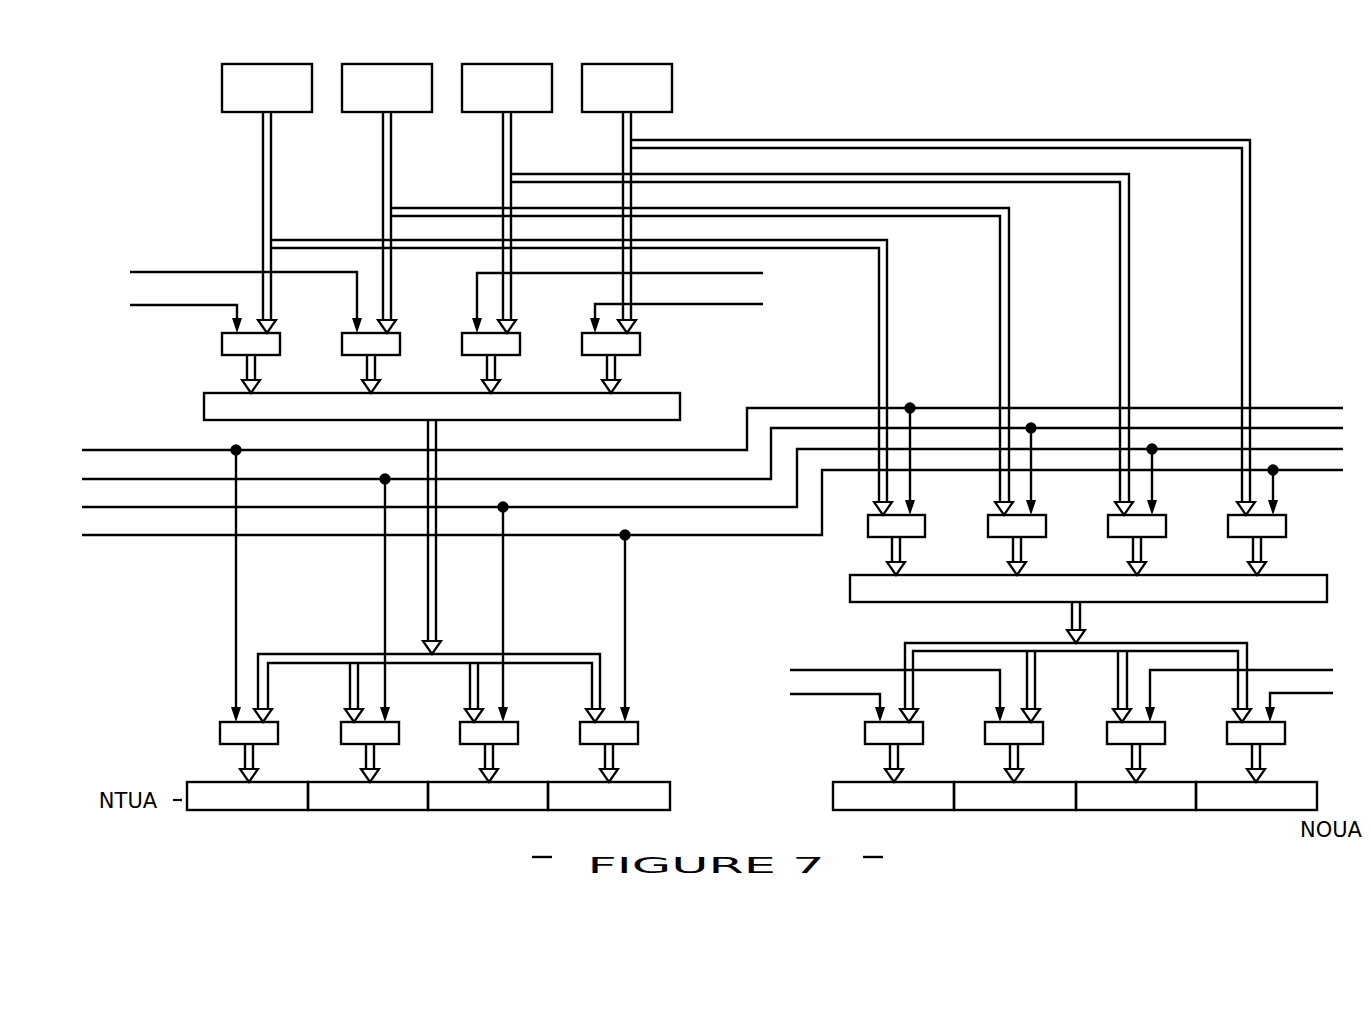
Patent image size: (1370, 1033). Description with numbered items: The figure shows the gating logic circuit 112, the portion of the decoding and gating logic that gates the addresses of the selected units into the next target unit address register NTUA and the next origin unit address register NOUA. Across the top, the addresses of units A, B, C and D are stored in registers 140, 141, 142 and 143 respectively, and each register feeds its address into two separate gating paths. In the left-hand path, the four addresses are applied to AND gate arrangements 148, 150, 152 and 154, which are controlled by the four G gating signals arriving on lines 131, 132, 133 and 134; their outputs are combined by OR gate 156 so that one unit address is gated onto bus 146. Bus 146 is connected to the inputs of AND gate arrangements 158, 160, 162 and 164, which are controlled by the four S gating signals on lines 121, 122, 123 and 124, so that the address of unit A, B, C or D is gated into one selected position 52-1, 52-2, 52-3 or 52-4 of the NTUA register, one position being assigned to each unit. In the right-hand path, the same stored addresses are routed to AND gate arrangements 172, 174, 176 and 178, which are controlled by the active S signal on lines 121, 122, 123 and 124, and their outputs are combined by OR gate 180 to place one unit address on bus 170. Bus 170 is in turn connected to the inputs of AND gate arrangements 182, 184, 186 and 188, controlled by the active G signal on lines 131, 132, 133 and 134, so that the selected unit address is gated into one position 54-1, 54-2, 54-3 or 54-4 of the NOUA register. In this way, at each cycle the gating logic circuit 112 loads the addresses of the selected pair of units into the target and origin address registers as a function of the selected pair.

The gating logic circuit 112 is at (933, 120).
The line carrying gating signal S1 121 is at (113, 448).
The line carrying gating signal S2 122 is at (113, 478).
The line carrying gating signal S3 123 is at (113, 506).
The line carrying gating signal S4 124 is at (113, 535).
The line carrying gating signal G1 131 is at (197, 306).
The output line carrying gating signal G2 132 is at (200, 272).
The output line carrying gating signal G3 133 is at (680, 270).
The output line carrying gating signal G4 134 is at (678, 303).
The address register for unit A 140 is at (280, 52).
The address register for unit B 141 is at (400, 52).
The address register for unit C 142 is at (520, 52).
The address register for unit D 143 is at (640, 52).
The bus 146 is at (437, 444).
The AND gate arrangement 148 is at (222, 348).
The AND gate arrangement 150 is at (342, 348).
The AND gate arrangement 152 is at (462, 348).
The AND gate arrangement 154 is at (582, 348).
The OR gate 156 is at (680, 406).
The AND gate arrangement 158 is at (221, 745).
The AND gate arrangement 160 is at (342, 745).
The AND gate arrangement 162 is at (461, 745).
The AND gate arrangement 164 is at (581, 745).
The bus 170 is at (1080, 628).
The AND gate arrangement 172 is at (869, 538).
The AND gate arrangement 174 is at (989, 538).
The AND gate arrangement 176 is at (1109, 538).
The AND gate arrangement 178 is at (1229, 538).
The OR gate 180 is at (850, 582).
The AND gate arrangement 182 is at (867, 744).
The AND gate arrangement 184 is at (987, 744).
The AND gate arrangement 186 is at (1107, 744).
The AND gate arrangement 188 is at (1227, 744).
The position of NTUA register 52-1 is at (247, 796).
The position of NTUA register 52-2 is at (368, 796).
The position of NTUA register 52-3 is at (488, 796).
The position of NTUA register 52-4 is at (609, 796).
The position of NOUA register 54-1 is at (893, 796).
The position of NOUA register 54-2 is at (1015, 796).
The position of NOUA register 54-3 is at (1136, 796).
The position of NOUA register 54-4 is at (1256, 796).